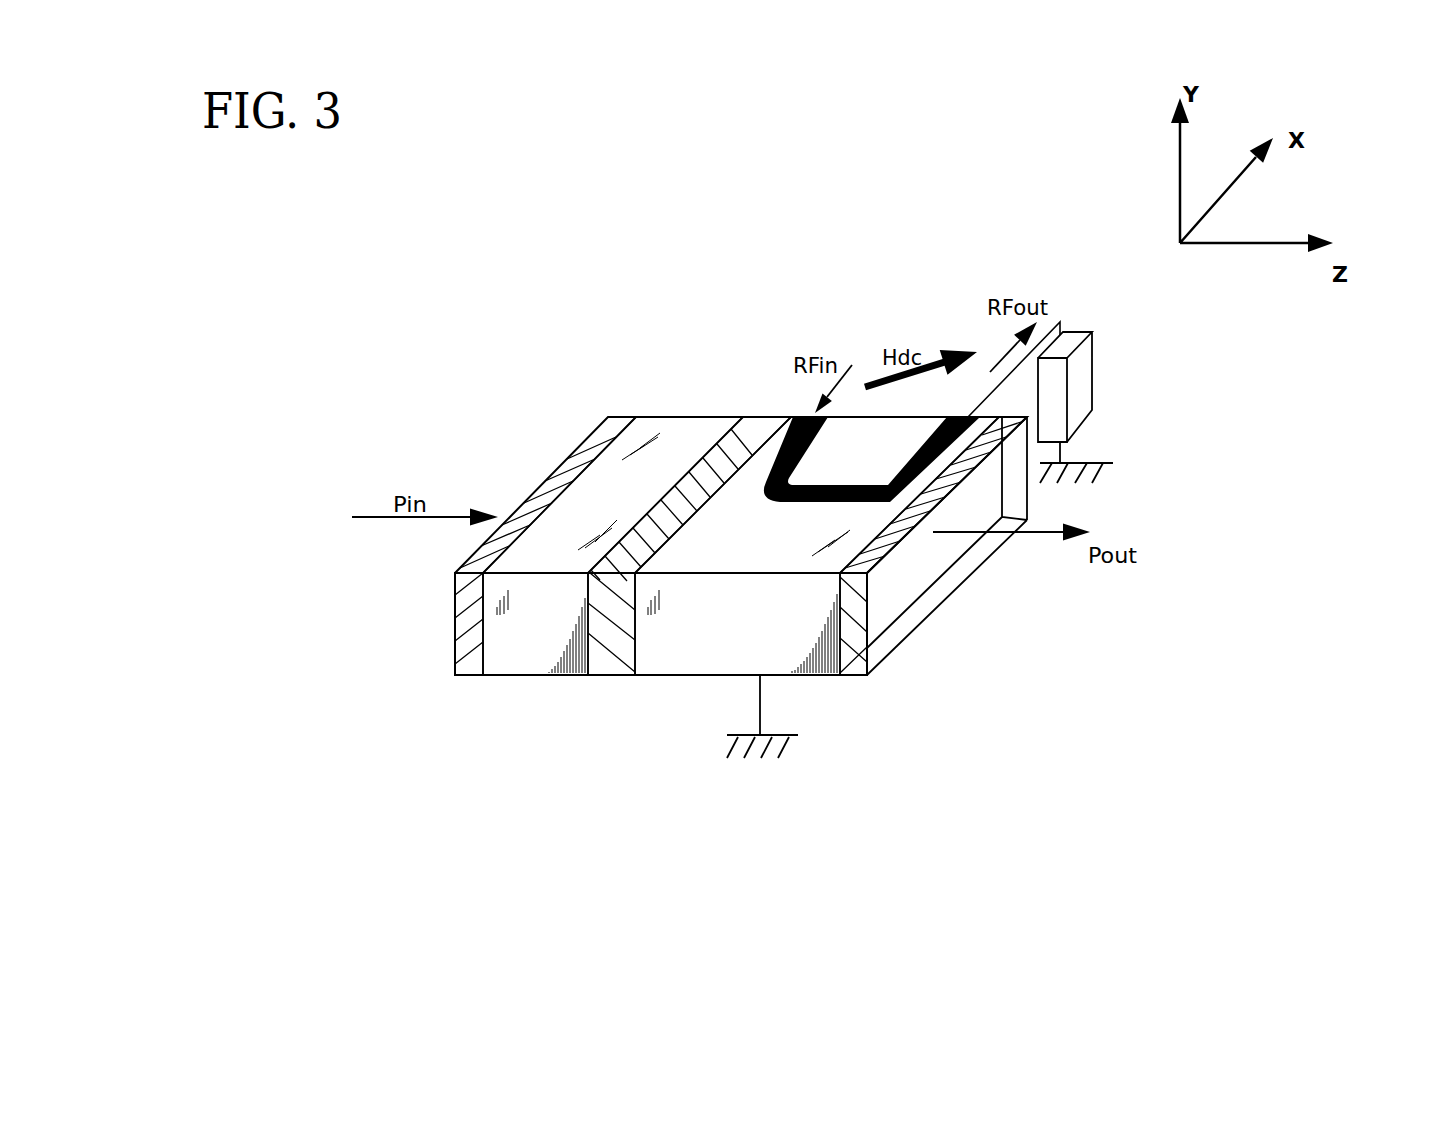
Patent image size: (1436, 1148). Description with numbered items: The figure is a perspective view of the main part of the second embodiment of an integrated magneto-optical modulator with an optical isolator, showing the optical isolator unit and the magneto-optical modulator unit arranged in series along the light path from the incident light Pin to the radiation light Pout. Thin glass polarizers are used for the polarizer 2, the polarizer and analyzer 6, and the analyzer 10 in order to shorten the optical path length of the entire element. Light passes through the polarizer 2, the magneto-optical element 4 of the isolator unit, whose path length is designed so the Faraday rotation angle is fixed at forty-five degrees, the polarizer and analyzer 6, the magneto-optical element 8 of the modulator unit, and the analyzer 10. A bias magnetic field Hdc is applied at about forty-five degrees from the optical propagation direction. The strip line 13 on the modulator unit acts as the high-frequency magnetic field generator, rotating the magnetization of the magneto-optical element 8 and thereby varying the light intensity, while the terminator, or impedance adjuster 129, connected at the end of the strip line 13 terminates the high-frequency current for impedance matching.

The polarizer 2 is at (475, 660).
The magneto-optical element 4 is at (556, 662).
The polarizer and analyzer 6 is at (612, 662).
The magneto-optical element 8 is at (683, 657).
The analyzer 10 is at (913, 615).
The strip line 13 is at (812, 440).
The terminator (impedance adjuster) 129 is at (1082, 368).